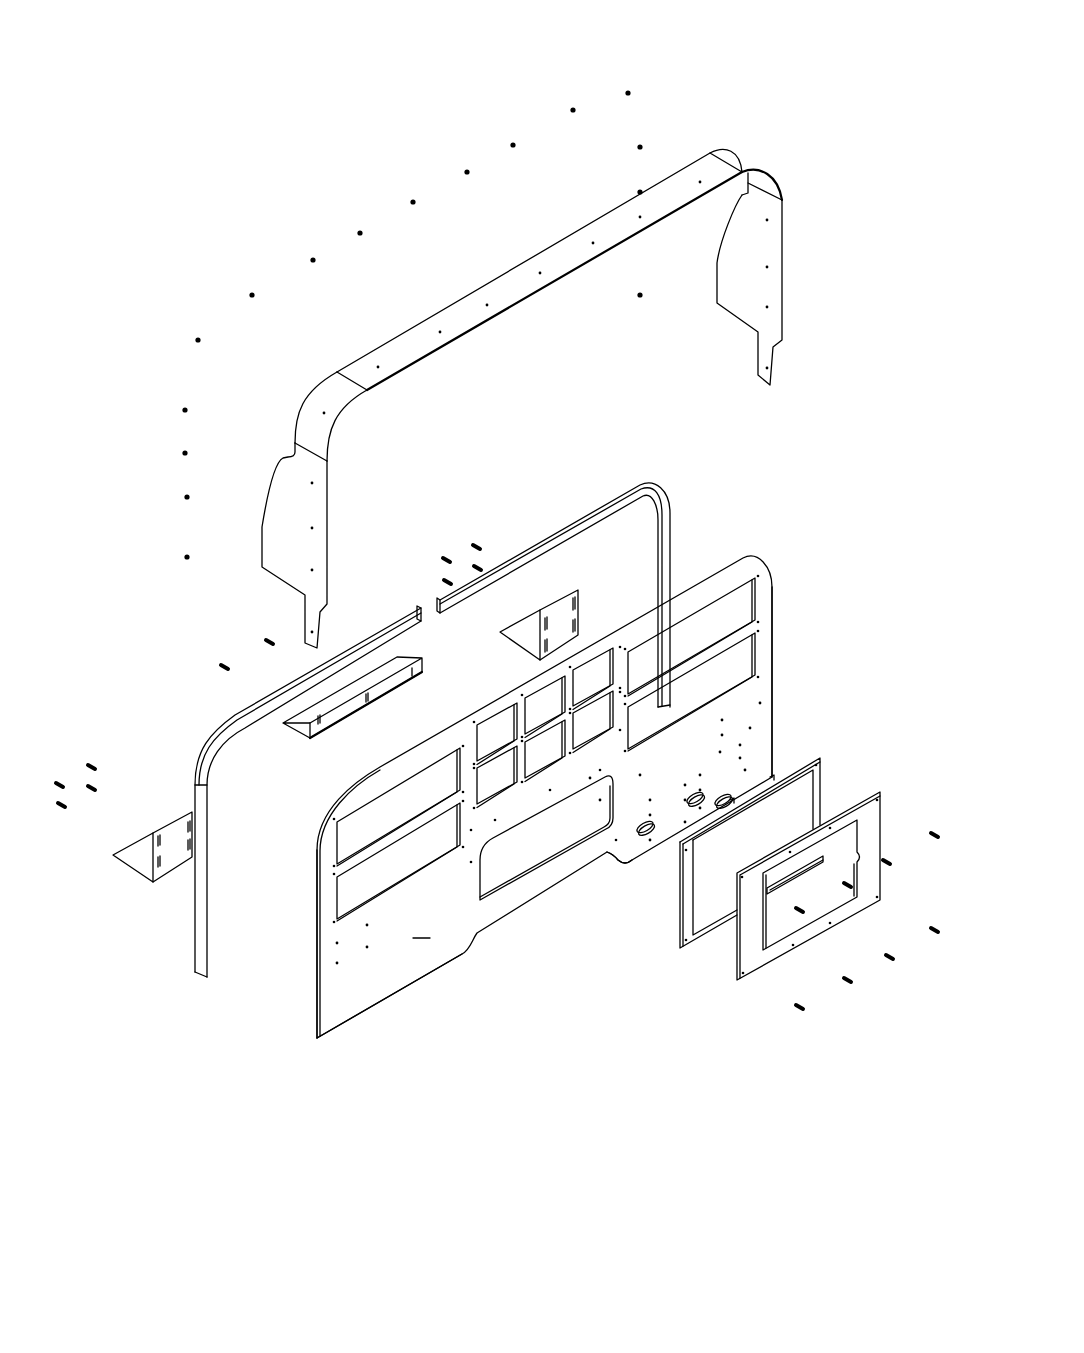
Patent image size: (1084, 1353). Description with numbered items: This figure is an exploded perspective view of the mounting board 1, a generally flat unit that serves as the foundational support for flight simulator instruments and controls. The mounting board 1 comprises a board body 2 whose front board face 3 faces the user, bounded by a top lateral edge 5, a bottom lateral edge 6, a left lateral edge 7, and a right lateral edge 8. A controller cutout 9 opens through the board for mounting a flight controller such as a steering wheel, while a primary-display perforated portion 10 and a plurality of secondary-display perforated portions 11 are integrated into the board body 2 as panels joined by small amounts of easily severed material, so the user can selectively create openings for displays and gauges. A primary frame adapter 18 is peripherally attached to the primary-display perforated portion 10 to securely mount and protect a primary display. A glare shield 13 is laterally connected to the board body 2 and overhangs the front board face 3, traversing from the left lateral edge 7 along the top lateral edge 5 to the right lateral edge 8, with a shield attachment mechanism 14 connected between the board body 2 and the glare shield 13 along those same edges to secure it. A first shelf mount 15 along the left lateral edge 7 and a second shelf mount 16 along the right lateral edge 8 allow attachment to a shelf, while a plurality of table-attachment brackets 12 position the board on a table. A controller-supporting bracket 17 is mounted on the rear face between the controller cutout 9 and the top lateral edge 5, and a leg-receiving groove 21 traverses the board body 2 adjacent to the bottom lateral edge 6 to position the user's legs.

The mounting board 1 is at (428, 85).
The board body 2 is at (370, 1037).
The front board face 3 is at (422, 922).
The top lateral edge 5 is at (688, 577).
The bottom lateral edge 6 is at (347, 1027).
The left lateral edge 7 is at (318, 962).
The right lateral edge 8 is at (773, 653).
The controller cutout 9 is at (520, 880).
The primary-display perforated portion 10 is at (620, 643).
The secondary-display perforated portions 11 is at (417, 777).
The table-attachment brackets 12 is at (560, 615).
The glare shield 13 is at (743, 163).
The shield attachment mechanism 14 is at (207, 753).
The first shelf mount 15 is at (277, 550).
The second shelf mount 16 is at (733, 293).
The controller-supporting bracket 17 is at (392, 663).
The primary frame adapter 18 is at (878, 820).
The leg-receiving groove 21 is at (594, 898).